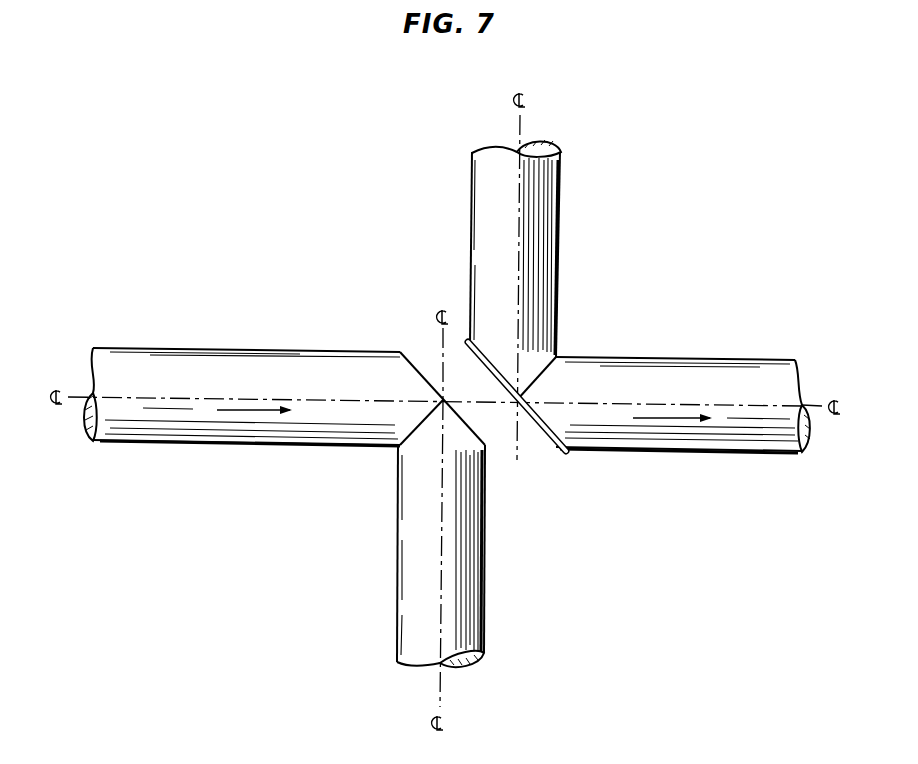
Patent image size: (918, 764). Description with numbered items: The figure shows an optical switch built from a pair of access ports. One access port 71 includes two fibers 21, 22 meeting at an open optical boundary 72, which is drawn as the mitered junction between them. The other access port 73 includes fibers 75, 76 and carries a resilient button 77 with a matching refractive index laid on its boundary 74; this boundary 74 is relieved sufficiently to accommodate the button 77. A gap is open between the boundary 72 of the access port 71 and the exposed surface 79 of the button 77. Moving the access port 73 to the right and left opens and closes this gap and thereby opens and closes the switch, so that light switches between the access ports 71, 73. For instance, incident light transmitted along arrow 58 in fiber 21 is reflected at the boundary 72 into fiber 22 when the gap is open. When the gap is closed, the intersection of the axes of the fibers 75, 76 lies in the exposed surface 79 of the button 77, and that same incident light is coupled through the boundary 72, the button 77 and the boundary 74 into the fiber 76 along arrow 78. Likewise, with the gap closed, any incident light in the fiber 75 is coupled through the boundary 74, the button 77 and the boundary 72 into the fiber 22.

The fiber 21 is at (168, 428).
The fiber 22 is at (415, 611).
The arrow 58 is at (248, 413).
The access port 71 is at (353, 507).
The open optical boundary 72 is at (415, 367).
The access port 73 is at (630, 315).
The boundary 74 is at (487, 353).
The fiber 75 is at (550, 272).
The fiber 76 is at (708, 372).
The resilient button 77 is at (553, 443).
The arrow 78 is at (675, 418).
The exposed surface 79 is at (530, 416).